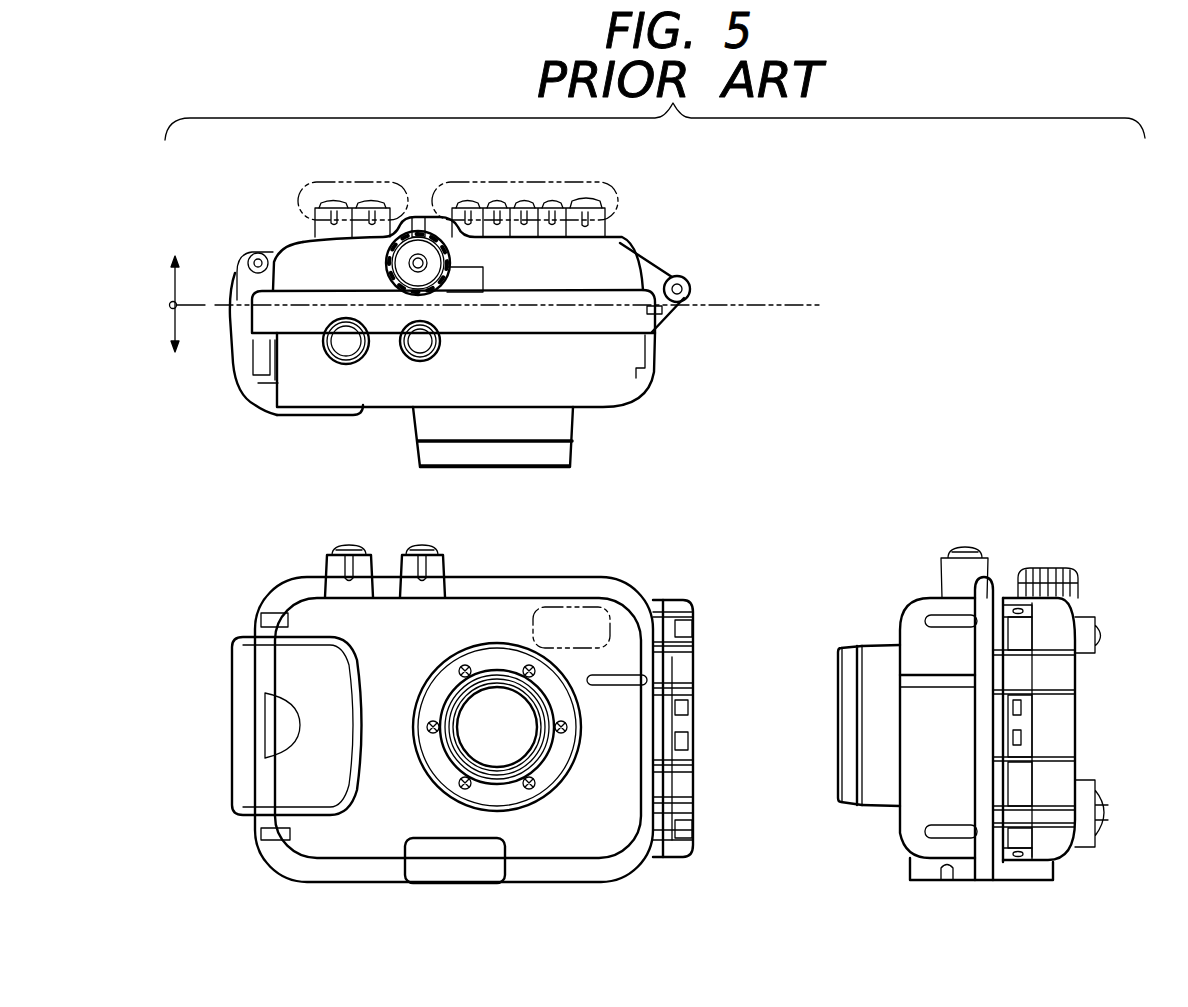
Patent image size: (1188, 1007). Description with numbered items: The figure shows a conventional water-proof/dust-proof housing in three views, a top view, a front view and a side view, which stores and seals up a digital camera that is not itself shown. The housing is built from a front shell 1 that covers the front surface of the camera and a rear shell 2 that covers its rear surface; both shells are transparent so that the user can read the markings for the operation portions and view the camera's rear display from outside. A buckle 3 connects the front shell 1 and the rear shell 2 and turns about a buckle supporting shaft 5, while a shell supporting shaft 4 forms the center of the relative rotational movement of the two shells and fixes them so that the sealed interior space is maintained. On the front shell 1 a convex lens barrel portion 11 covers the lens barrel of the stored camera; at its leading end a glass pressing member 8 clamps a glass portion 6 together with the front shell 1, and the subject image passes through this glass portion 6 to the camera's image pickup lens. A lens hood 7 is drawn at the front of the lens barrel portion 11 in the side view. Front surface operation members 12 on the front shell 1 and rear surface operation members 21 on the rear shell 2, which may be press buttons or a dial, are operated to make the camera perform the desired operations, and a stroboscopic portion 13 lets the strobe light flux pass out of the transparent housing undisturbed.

The front shell 1 is at (607, 368).
The rear shell 2 is at (608, 258).
The buckle 3 is at (245, 377).
The shell supporting shaft 4 is at (690, 283).
The buckle supporting shaft 5 is at (250, 255).
The glass portion of lens barrel 6 is at (507, 727).
The lens hood 7 is at (838, 683).
The glass pressing member 8 is at (532, 458).
The lens barrel portion 11 is at (547, 432).
The front surface operation members 12 is at (420, 347).
The stroboscopic portion 13 is at (580, 600).
The rear surface operation members 21 is at (510, 176).